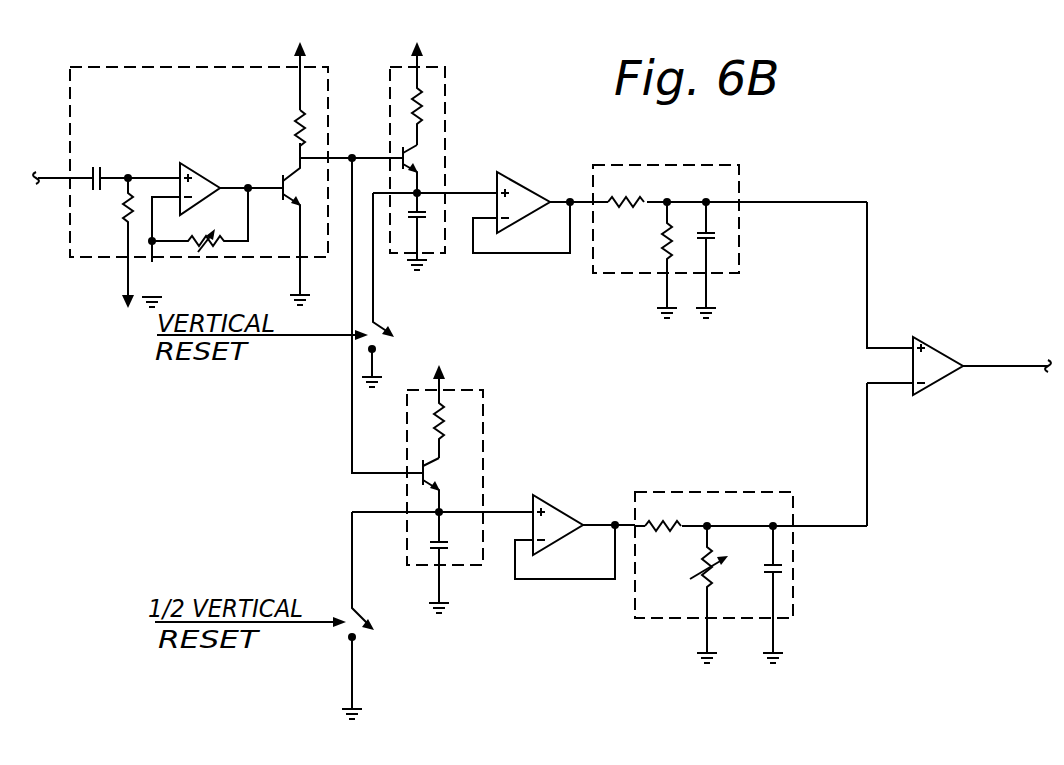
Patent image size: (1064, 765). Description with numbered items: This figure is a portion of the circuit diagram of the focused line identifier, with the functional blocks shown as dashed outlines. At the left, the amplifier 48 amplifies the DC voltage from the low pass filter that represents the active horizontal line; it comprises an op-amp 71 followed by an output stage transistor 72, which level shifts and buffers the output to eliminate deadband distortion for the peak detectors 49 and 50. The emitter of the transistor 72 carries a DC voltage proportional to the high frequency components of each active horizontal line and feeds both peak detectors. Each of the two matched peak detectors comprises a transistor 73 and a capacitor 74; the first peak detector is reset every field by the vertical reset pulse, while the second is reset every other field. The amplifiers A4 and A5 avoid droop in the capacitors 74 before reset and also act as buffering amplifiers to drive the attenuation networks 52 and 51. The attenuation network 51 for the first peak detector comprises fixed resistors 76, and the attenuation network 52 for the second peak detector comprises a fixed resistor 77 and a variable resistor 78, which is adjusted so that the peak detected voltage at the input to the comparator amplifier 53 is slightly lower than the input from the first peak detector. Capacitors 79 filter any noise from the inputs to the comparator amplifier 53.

The amplifier 48 is at (163, 67).
The peak detector 49 is at (445, 90).
The peak detector 50 is at (483, 425).
The attenuation network 51 is at (705, 492).
The attenuation network 52 is at (722, 165).
The comparator amplifier 53 is at (937, 345).
The op-amp 71 is at (203, 170).
The output stage transistor 72 is at (284, 172).
The transistor 73 is at (403, 151).
The capacitor 74 is at (424, 216).
The fixed resistors 76 is at (628, 208).
The fixed resistor 77 is at (665, 518).
The variable resistor 78 is at (701, 557).
The capacitors 79 is at (716, 237).
The amplifier A4 is at (520, 178).
The amplifier A5 is at (558, 500).